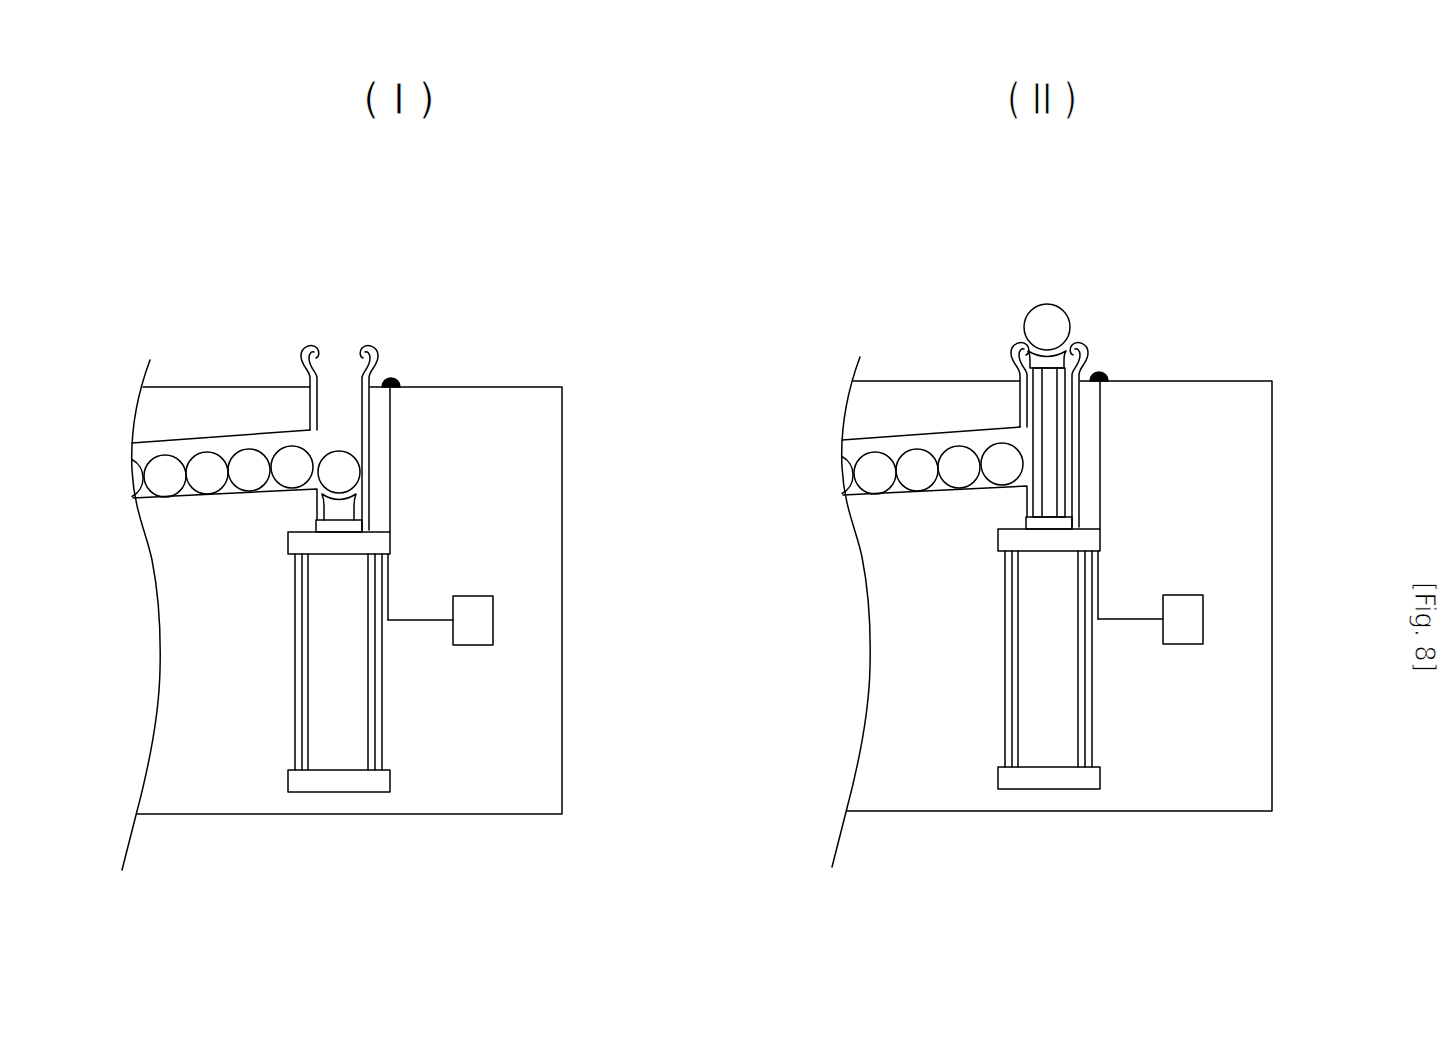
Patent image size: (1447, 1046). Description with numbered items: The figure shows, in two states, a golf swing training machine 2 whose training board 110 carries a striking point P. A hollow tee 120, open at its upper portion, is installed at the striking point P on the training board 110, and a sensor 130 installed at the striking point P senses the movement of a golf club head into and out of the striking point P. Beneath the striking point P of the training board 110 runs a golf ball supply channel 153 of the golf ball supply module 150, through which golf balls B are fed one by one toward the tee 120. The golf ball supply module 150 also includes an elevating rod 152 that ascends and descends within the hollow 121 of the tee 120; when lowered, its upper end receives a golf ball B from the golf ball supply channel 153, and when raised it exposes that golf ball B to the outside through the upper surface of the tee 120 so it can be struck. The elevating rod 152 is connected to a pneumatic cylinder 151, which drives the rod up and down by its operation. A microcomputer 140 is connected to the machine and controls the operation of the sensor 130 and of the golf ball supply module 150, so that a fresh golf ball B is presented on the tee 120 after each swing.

The golf swing training machine 2 is at (183, 262).
The striking point P is at (421, 263).
The golf ball B is at (345, 465).
The training board 110 is at (498, 418).
The tee 120 is at (307, 347).
The hollow 121 is at (320, 370).
The sensor 130 is at (393, 380).
The microcomputer 140 is at (480, 620).
The golf ball supply module 150 is at (385, 682).
The pneumatic cylinder 151 is at (328, 619).
The elevating rod 152 is at (347, 505).
The golf ball supply channel 153 is at (268, 437).